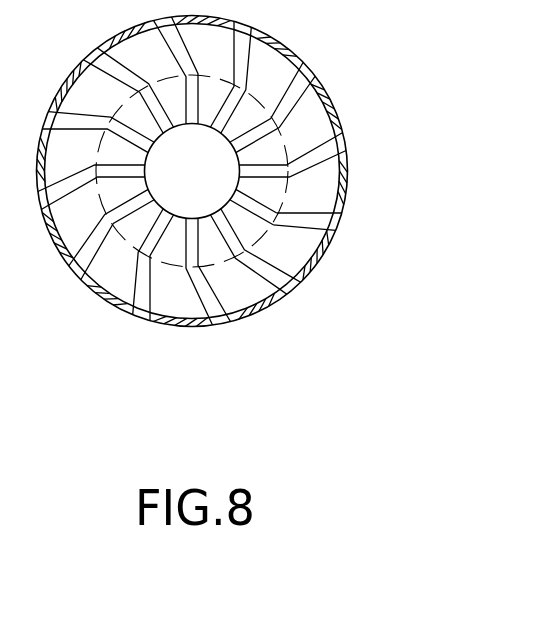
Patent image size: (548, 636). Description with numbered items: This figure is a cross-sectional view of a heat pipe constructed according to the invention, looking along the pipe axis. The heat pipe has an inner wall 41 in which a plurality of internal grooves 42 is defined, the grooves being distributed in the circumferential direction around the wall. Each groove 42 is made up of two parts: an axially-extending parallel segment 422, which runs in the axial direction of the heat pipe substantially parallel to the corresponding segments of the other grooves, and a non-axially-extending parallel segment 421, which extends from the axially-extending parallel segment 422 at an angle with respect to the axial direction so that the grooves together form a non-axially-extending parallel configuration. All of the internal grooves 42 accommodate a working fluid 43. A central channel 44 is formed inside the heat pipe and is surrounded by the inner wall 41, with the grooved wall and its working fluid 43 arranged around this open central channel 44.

The inner wall 41 is at (341, 121).
The internal grooves 42 is at (273, 171).
The non-axially-extending parallel segment 421 is at (330, 205).
The axially-extending parallel segment 422 is at (257, 216).
The working fluid 43 is at (228, 162).
The central channel 44 is at (305, 137).